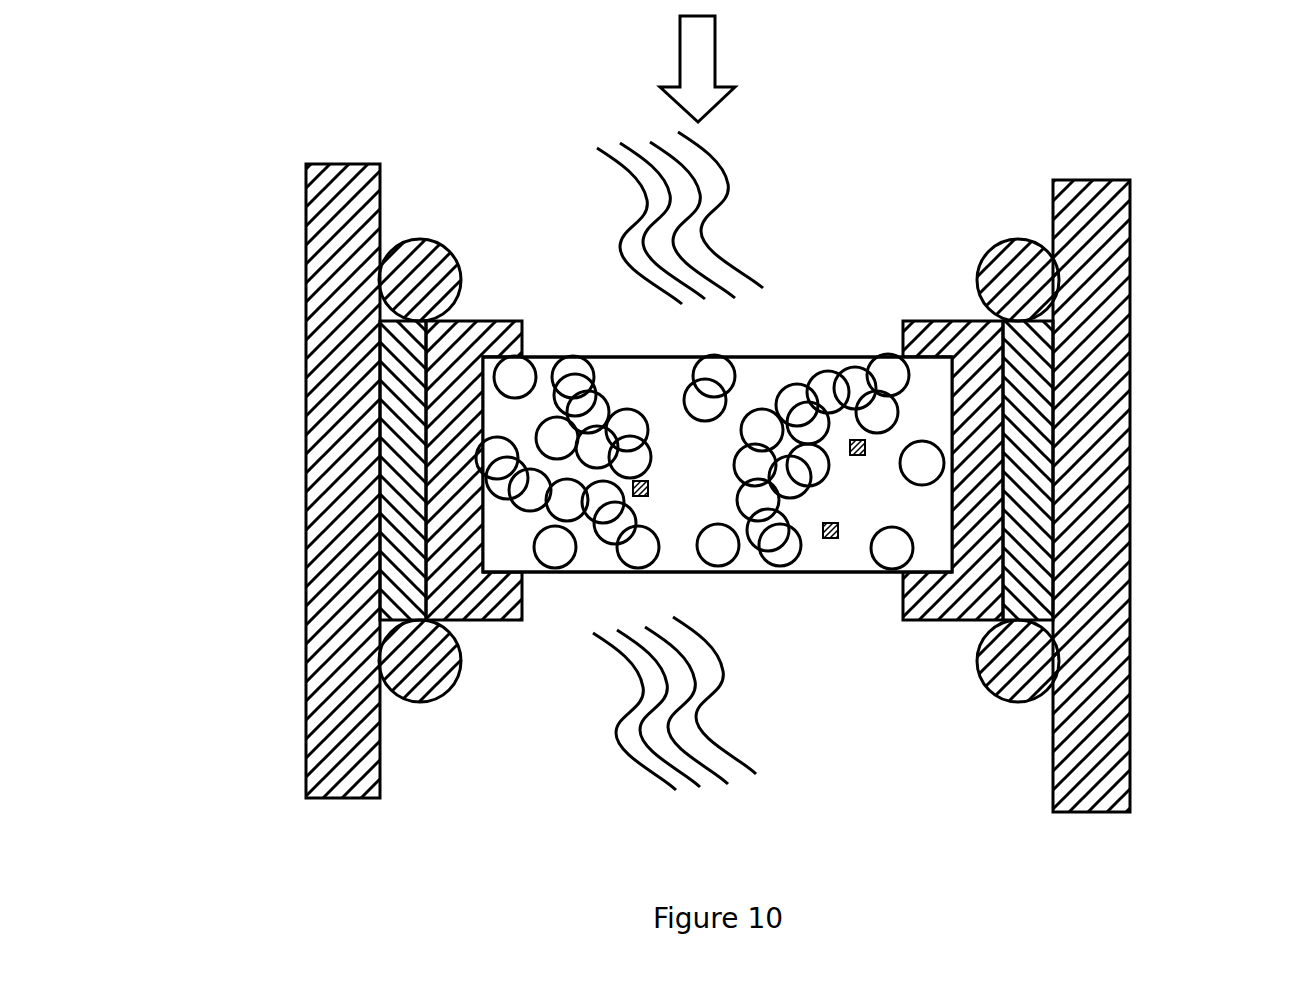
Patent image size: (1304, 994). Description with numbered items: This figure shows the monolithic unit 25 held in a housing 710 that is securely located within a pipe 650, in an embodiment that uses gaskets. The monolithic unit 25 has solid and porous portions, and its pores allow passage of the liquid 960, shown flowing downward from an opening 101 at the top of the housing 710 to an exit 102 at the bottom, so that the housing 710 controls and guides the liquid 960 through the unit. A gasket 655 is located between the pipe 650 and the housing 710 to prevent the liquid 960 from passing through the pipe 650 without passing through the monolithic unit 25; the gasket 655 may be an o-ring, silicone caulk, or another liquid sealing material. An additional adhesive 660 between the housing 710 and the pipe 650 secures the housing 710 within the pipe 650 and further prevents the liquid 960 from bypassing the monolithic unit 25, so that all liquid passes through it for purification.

The monolithic unit 25 is at (805, 372).
The opening 101 is at (808, 313).
The exit 102 is at (775, 622).
The pipe 650 is at (353, 470).
The gasket 655 is at (412, 265).
The adhesive 660 is at (412, 425).
The housing 710 is at (482, 335).
The liquid 960 is at (590, 138).